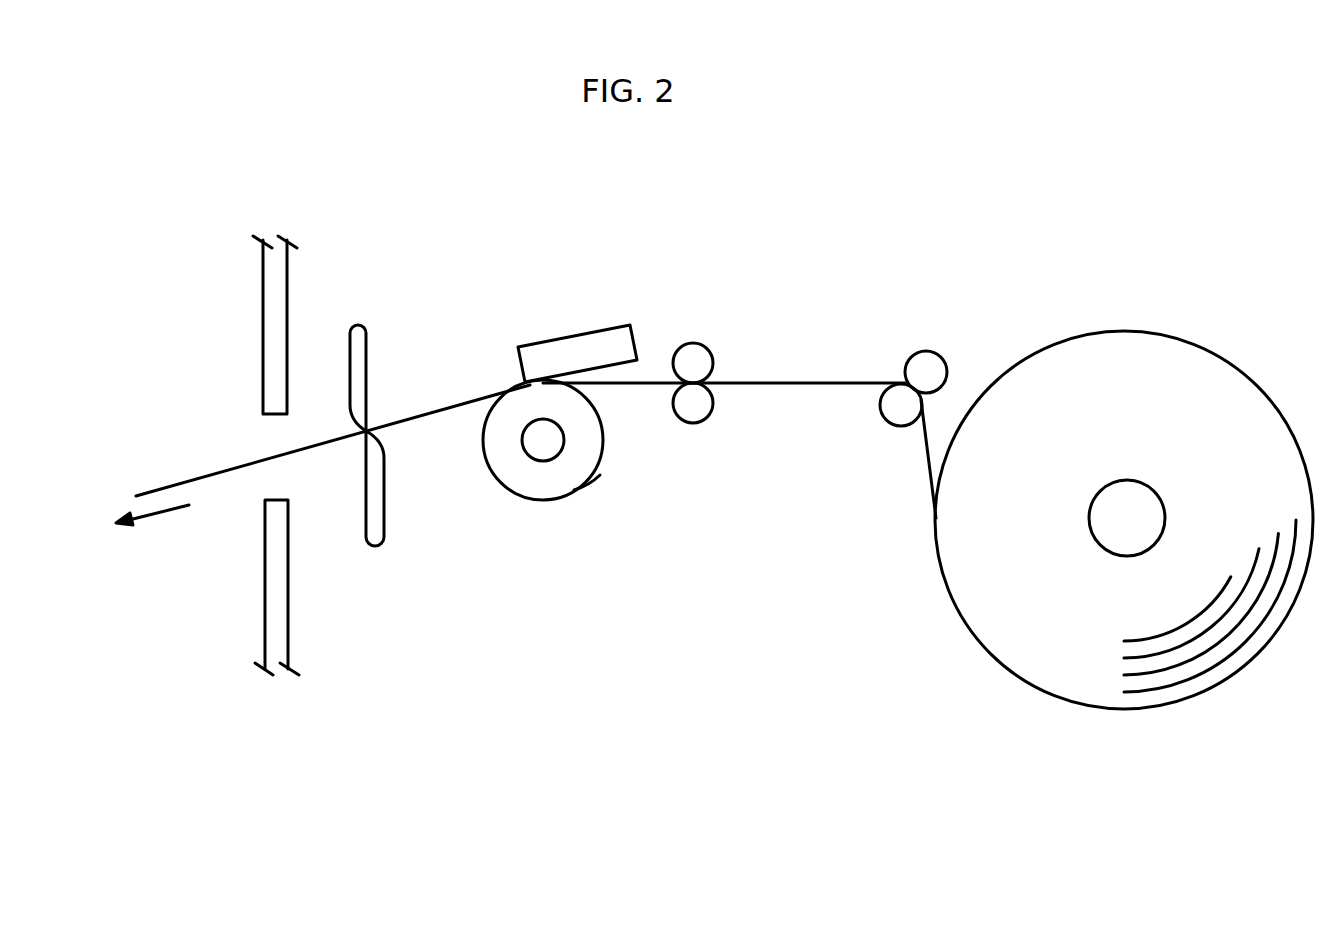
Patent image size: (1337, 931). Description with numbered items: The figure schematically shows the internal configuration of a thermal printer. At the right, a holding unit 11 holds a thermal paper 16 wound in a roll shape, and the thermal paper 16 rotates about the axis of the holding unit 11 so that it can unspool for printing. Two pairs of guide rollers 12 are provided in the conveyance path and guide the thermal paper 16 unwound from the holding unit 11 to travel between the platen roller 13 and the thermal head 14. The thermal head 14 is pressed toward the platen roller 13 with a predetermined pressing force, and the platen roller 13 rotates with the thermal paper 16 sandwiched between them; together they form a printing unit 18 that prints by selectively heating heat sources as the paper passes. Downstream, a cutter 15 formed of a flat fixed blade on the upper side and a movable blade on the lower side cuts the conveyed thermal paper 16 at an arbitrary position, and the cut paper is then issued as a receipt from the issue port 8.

The issue port 8 is at (275, 429).
The holding unit 11 is at (1127, 500).
The guide rollers 12 is at (925, 288).
The platen roller 13 is at (545, 490).
The thermal head 14 is at (520, 368).
The cutter 15 is at (353, 452).
The thermal paper 16 is at (1062, 678).
The printing unit 18 is at (584, 504).